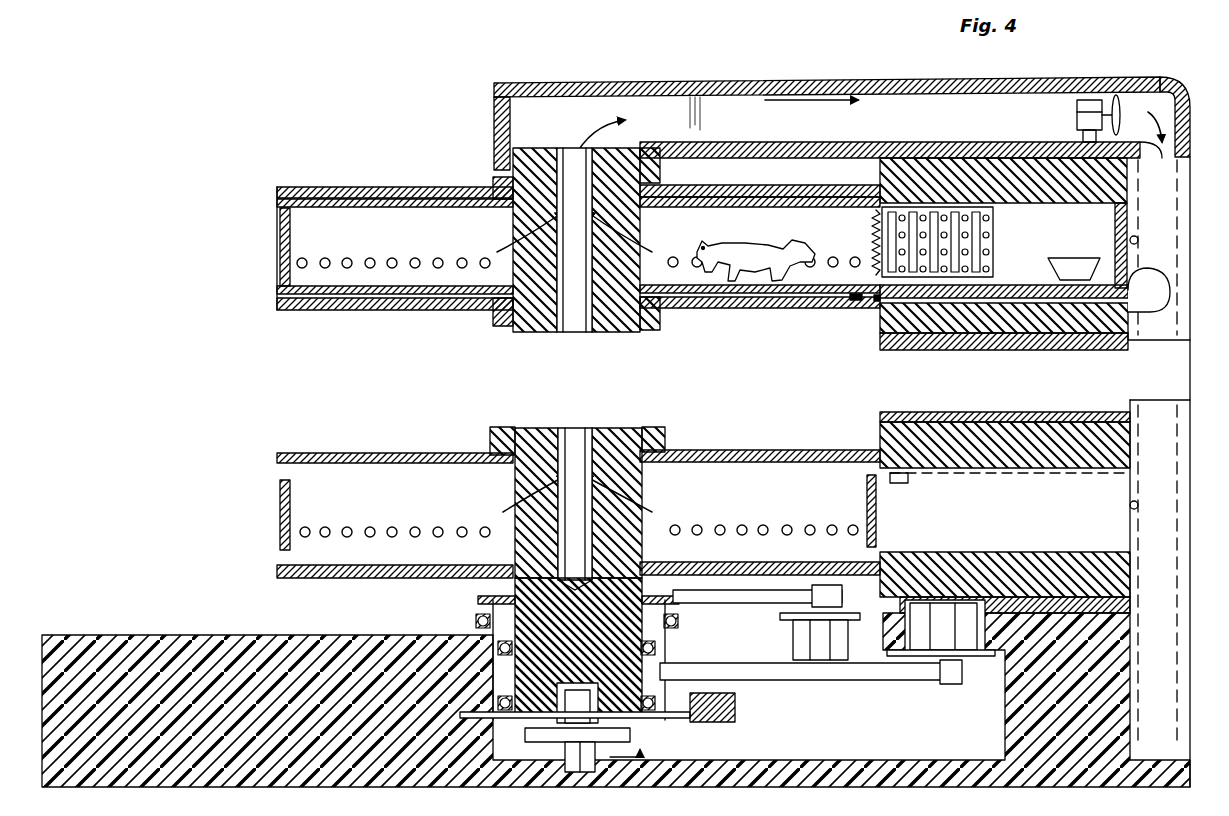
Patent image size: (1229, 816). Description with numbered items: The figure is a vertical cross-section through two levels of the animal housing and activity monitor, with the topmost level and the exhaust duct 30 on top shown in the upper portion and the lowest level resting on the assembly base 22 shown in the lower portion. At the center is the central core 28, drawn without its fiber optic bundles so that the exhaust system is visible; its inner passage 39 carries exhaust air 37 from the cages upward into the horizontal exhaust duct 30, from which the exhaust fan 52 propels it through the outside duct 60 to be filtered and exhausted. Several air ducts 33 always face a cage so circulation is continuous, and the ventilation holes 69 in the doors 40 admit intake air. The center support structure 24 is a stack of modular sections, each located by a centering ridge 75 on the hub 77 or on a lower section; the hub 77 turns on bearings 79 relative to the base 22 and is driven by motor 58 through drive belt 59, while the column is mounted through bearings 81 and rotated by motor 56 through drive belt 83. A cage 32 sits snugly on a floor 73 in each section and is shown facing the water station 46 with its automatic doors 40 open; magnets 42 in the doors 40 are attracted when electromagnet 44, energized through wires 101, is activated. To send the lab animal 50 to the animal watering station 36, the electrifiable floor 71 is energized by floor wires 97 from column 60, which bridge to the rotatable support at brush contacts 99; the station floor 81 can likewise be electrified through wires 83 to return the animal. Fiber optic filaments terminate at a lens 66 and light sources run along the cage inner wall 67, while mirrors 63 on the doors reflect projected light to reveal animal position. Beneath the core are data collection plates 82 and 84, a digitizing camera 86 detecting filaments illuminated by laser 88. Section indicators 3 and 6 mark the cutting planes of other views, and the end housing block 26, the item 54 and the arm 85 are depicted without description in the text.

The section line 3- 3 is at (450, 203).
The section line 6- 6 is at (555, 532).
The assembly base 22 is at (112, 632).
The center support structure 24 is at (737, 310).
The end housing block 26 is at (1027, 270).
The central core 28 is at (530, 142).
The horizontal exhaust duct 30 is at (912, 83).
The cage 32 is at (578, 371).
The air ducts 33 is at (545, 318).
The animal watering station 36 is at (1105, 216).
The exhaust air 37 is at (808, 100).
The inner passage 39 is at (578, 322).
The doors 40 is at (279, 238).
The magnets 42 is at (878, 505).
The electromagnet 44 is at (900, 484).
The water station 46 is at (1076, 262).
The lab animal 50 is at (780, 284).
The exhaust fan 52 is at (1096, 100).
The air plenum 54 is at (980, 108).
The motor 56 is at (957, 640).
The motor 58 is at (815, 661).
The drive belt 59 is at (745, 597).
The outside duct 60 is at (1185, 327).
The mirrors 63 is at (970, 240).
The lens 66 is at (372, 257).
The cage inner wall 67 is at (452, 187).
The ventilation holes 69 is at (876, 228).
The electrifiable floor 71 is at (388, 292).
The floor 73 is at (340, 312).
The centering ridge 75 is at (500, 326).
The hub 77 is at (480, 600).
The bearings 79 is at (474, 622).
The bearings / activity station floor 81 is at (737, 710).
The data collection plate 82 is at (530, 718).
The drive belt / wires 83 is at (1143, 316).
The data collection plate 84 is at (648, 738).
The drive arm 85 is at (770, 681).
The digitizing camera 86 is at (577, 703).
The laser 88 is at (570, 757).
The floor wires 97 is at (987, 338).
The brush contacts 99 is at (879, 303).
The wires 101 is at (1023, 472).